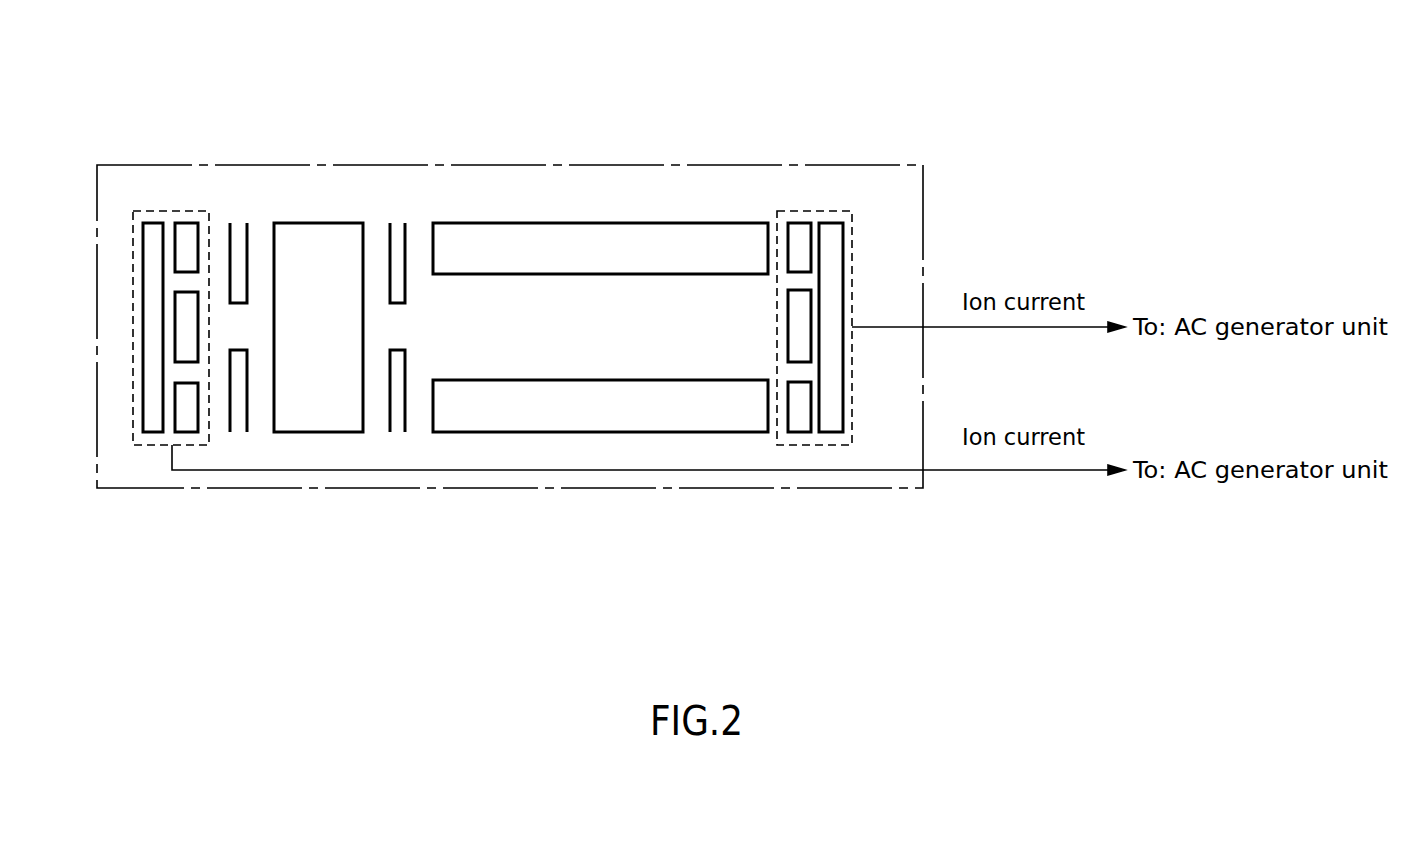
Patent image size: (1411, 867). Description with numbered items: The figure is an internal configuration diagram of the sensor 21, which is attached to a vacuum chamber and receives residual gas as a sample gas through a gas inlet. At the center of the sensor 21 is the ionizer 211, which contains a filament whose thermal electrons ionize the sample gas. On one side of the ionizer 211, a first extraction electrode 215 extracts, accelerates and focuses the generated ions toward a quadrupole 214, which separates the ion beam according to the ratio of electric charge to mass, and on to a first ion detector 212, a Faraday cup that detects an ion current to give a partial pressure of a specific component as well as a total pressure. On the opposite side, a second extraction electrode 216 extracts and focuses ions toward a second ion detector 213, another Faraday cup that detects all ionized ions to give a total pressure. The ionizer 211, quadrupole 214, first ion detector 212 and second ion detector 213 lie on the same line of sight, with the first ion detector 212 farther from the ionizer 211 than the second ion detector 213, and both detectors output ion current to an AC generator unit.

The sensor 21 is at (512, 165).
The ionizer 211 is at (326, 223).
The first ion detector 212 is at (815, 211).
The second ion detector 213 is at (175, 211).
The quadrupole 214 is at (603, 223).
The first extraction electrode 215 is at (405, 223).
The second extraction electrode 216 is at (245, 223).